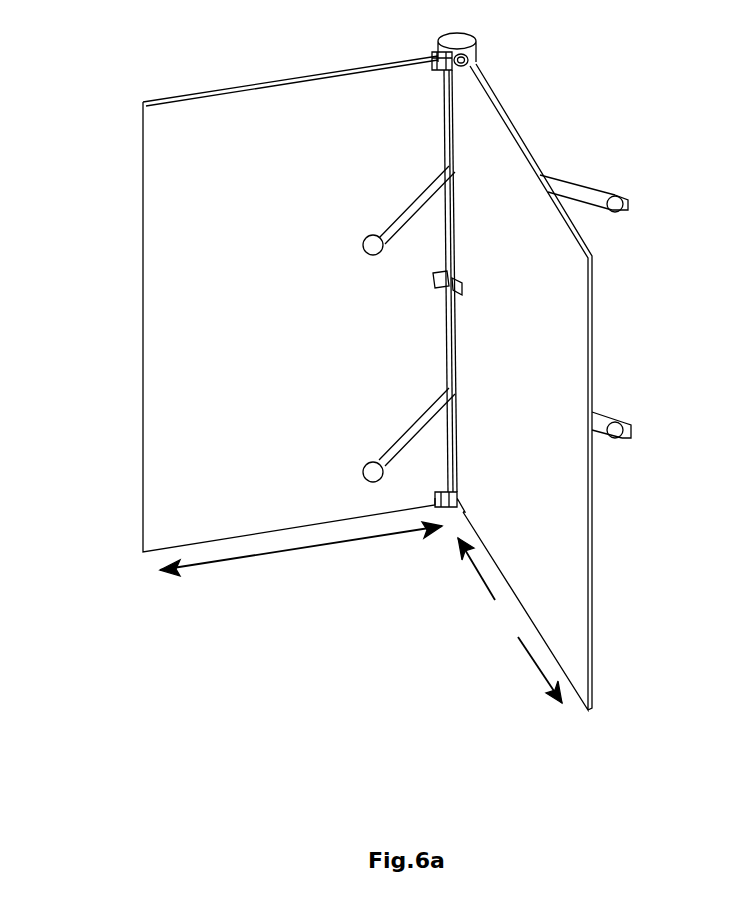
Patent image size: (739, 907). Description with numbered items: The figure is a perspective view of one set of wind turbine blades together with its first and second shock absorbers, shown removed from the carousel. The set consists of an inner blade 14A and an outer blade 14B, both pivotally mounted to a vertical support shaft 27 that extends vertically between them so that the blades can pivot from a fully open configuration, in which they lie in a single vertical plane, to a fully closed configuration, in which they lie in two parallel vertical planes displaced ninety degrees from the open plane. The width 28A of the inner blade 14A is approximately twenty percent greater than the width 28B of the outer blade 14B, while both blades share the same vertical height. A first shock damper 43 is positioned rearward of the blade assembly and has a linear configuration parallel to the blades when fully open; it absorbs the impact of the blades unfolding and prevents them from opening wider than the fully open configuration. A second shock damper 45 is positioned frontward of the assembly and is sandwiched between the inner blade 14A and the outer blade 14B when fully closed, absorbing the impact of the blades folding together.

The inner blade 14A is at (550, 296).
The outer blade 14B is at (172, 160).
The vertical support shaft 27 is at (445, 108).
The width of innermost blade 28A is at (510, 620).
The width of outermost blade 28B is at (301, 549).
The first shock damper 43 is at (397, 222).
The second shock damper 45 is at (585, 192).